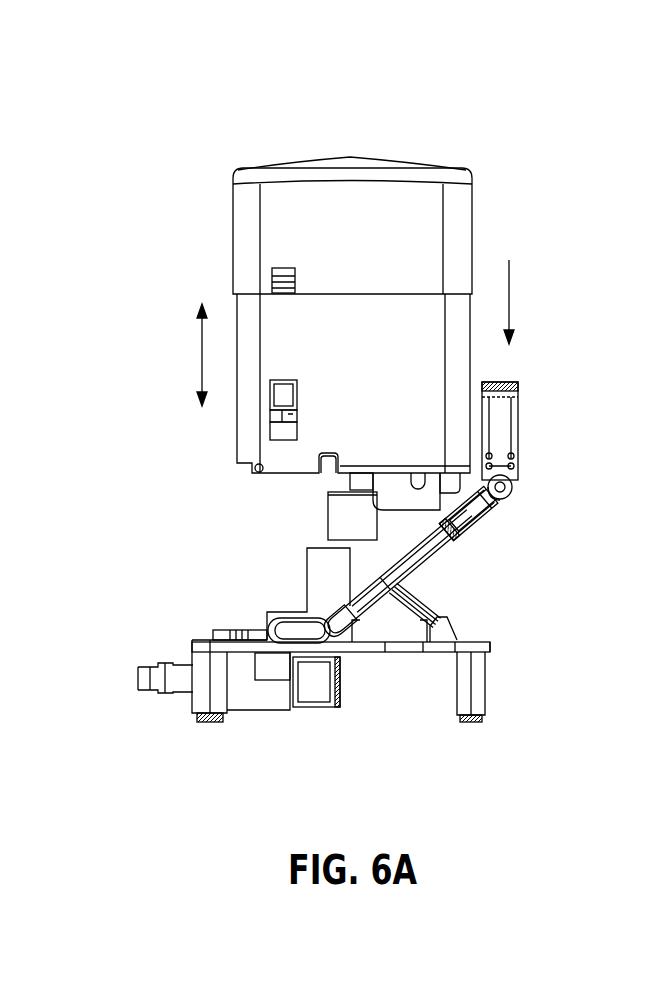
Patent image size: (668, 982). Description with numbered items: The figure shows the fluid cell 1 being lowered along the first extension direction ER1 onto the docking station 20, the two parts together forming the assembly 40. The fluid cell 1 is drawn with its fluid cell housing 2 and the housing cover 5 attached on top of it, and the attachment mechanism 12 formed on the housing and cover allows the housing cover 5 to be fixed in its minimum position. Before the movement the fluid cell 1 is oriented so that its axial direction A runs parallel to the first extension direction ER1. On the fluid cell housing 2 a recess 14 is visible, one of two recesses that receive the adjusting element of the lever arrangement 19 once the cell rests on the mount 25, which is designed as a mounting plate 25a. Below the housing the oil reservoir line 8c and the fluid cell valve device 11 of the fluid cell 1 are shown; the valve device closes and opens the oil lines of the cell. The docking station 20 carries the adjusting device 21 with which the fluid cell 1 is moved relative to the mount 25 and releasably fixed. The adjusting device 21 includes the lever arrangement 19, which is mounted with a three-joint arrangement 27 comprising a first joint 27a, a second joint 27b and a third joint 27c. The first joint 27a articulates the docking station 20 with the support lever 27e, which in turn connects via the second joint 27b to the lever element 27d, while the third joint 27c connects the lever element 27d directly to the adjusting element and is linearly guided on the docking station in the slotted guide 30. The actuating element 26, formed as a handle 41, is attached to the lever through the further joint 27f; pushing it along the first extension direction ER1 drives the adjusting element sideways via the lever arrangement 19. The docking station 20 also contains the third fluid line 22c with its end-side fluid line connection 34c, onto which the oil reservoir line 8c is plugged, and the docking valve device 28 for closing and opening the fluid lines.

The fluid cell 1 is at (205, 263).
The assembly 40 is at (508, 164).
The housing cover 5 is at (373, 212).
The fluid cell housing 2 is at (362, 352).
The attachment mechanism 12 is at (294, 280).
The recess 14 is at (342, 455).
The axial direction A is at (198, 352).
The first extension direction ER1 is at (513, 292).
The lever arrangement 19 is at (556, 447).
The actuating element 26 is at (512, 384).
The handle 41 is at (500, 431).
The three-joint arrangement 27 is at (506, 554).
The first joint 27a is at (450, 625).
The second joint 27b is at (398, 560).
The third joint 27c is at (336, 640).
The lever element 27d is at (490, 510).
The support lever 27e is at (432, 598).
The further joint 27f is at (512, 487).
The oil reservoir line 8c is at (328, 510).
The fluid cell valve device 11 is at (377, 538).
The adjusting device 21 is at (242, 582).
The slotted guide 30 is at (290, 620).
The mount 25 is at (225, 630).
The mounting plate 25a is at (240, 635).
The docking station 20 is at (156, 634).
The third fluid line 22c is at (245, 690).
The fluid line connection 34c is at (340, 690).
The docking valve device 28 is at (312, 700).